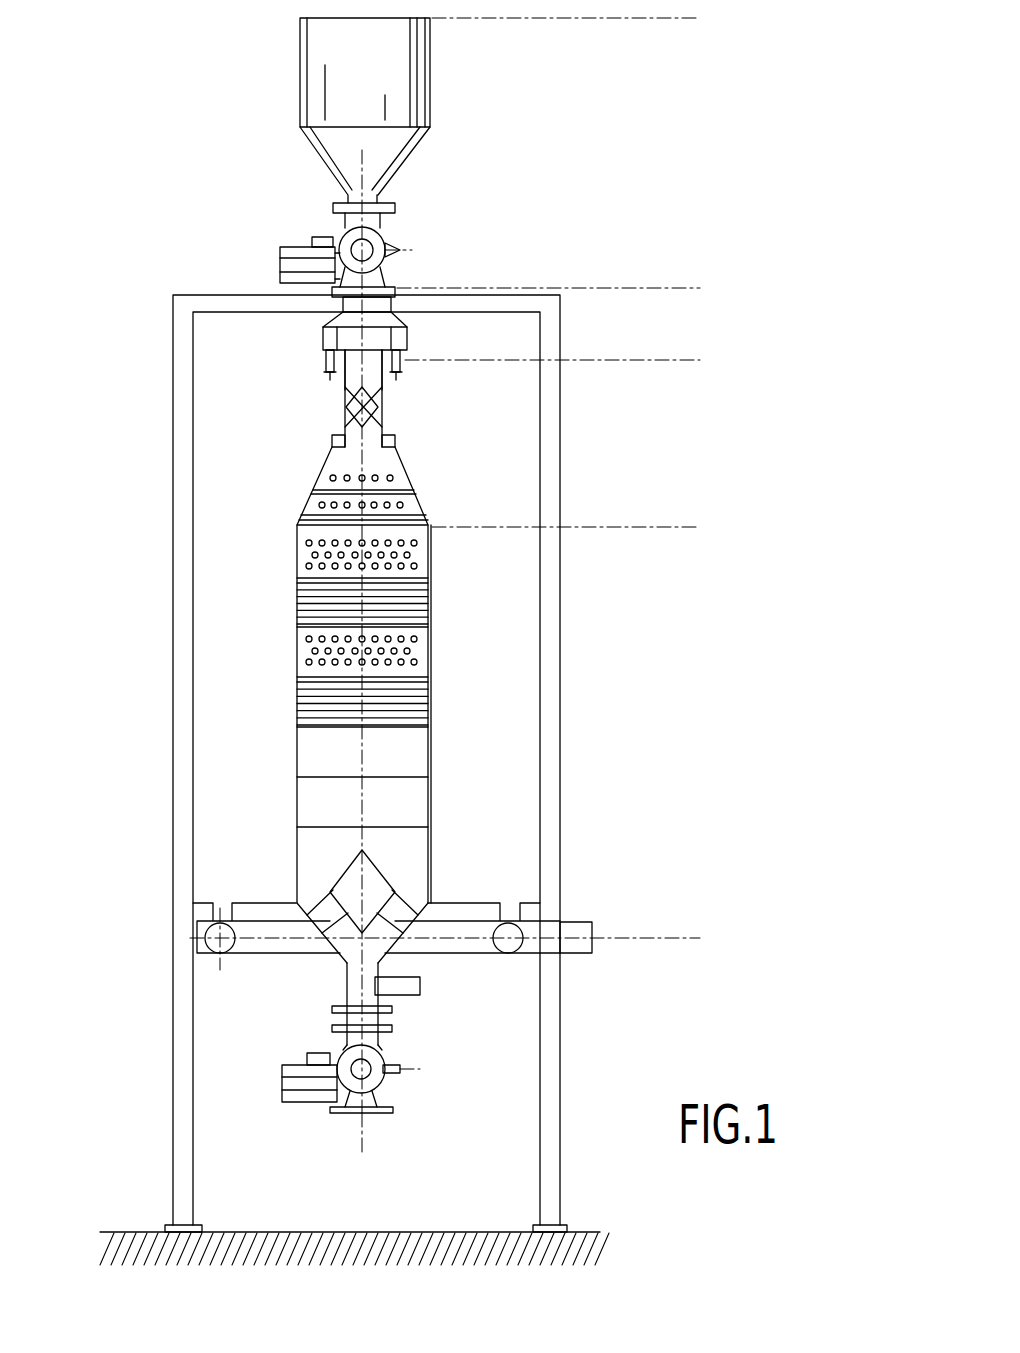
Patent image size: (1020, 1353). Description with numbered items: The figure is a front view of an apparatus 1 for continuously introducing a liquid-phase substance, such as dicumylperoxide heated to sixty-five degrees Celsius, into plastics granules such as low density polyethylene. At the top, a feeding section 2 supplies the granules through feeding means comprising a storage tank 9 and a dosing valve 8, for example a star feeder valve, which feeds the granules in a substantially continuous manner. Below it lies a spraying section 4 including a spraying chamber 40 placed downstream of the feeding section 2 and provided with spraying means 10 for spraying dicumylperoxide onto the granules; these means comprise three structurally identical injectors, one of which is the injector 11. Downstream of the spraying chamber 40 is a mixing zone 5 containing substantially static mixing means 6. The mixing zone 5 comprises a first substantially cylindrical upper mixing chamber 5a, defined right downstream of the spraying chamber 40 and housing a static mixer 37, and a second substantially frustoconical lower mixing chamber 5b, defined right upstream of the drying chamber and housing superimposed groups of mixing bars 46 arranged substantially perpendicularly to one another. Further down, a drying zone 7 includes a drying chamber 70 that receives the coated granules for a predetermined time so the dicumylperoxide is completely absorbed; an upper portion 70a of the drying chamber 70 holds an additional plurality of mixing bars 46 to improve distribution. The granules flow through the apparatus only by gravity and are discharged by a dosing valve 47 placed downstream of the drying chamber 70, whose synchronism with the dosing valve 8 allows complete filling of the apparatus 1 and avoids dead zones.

The apparatus 1 is at (148, 148).
The feeding section 2 is at (644, 20).
The spraying section 4 is at (644, 294).
The mixing zone 5 is at (644, 368).
The upper mixing chamber 5a is at (370, 425).
The lower mixing chamber 5b is at (405, 476).
The static mixing means 6 is at (410, 392).
The drying zone 7 is at (644, 536).
The dosing valve 8 is at (398, 234).
The storage tank 9 is at (437, 73).
The spraying means 10 is at (315, 368).
The injector 11 is at (410, 356).
The static mixer 37 is at (345, 403).
The spraying chamber 40 is at (350, 339).
The mixing bars 46 is at (413, 507).
The dosing valve 47 is at (400, 1054).
The drying chamber 70 is at (432, 745).
The upper portion of the drying chamber 70a is at (432, 595).